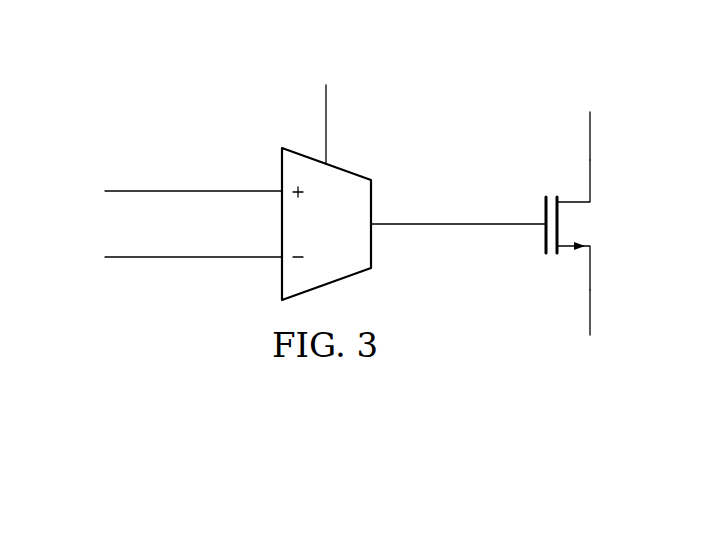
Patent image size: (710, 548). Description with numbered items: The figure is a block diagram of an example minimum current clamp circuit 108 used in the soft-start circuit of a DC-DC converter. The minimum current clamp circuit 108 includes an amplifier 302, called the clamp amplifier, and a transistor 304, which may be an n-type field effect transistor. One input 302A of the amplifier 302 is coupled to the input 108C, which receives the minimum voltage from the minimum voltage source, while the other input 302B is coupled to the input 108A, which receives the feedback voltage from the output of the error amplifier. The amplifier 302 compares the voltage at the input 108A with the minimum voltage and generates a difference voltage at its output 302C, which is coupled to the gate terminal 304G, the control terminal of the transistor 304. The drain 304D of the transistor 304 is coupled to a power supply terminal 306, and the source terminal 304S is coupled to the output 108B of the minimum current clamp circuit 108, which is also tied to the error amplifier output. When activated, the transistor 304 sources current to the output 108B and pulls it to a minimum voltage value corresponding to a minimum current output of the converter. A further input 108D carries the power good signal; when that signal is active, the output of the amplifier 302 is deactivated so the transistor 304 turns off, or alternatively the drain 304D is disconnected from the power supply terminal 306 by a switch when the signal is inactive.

The minimum current clamp circuit 108 is at (468, 74).
The input 108A is at (128, 263).
The output 108B is at (590, 325).
The input 108C is at (128, 189).
The input 108D is at (325, 104).
The amplifier 302 is at (356, 163).
The input 302A is at (280, 182).
The input 302B is at (278, 268).
The output 302C is at (373, 231).
The transistor 304 is at (534, 206).
The gate terminal 304G is at (525, 225).
The drain 304D is at (590, 195).
The source terminal 304S is at (590, 258).
The power supply terminal 306 is at (590, 138).